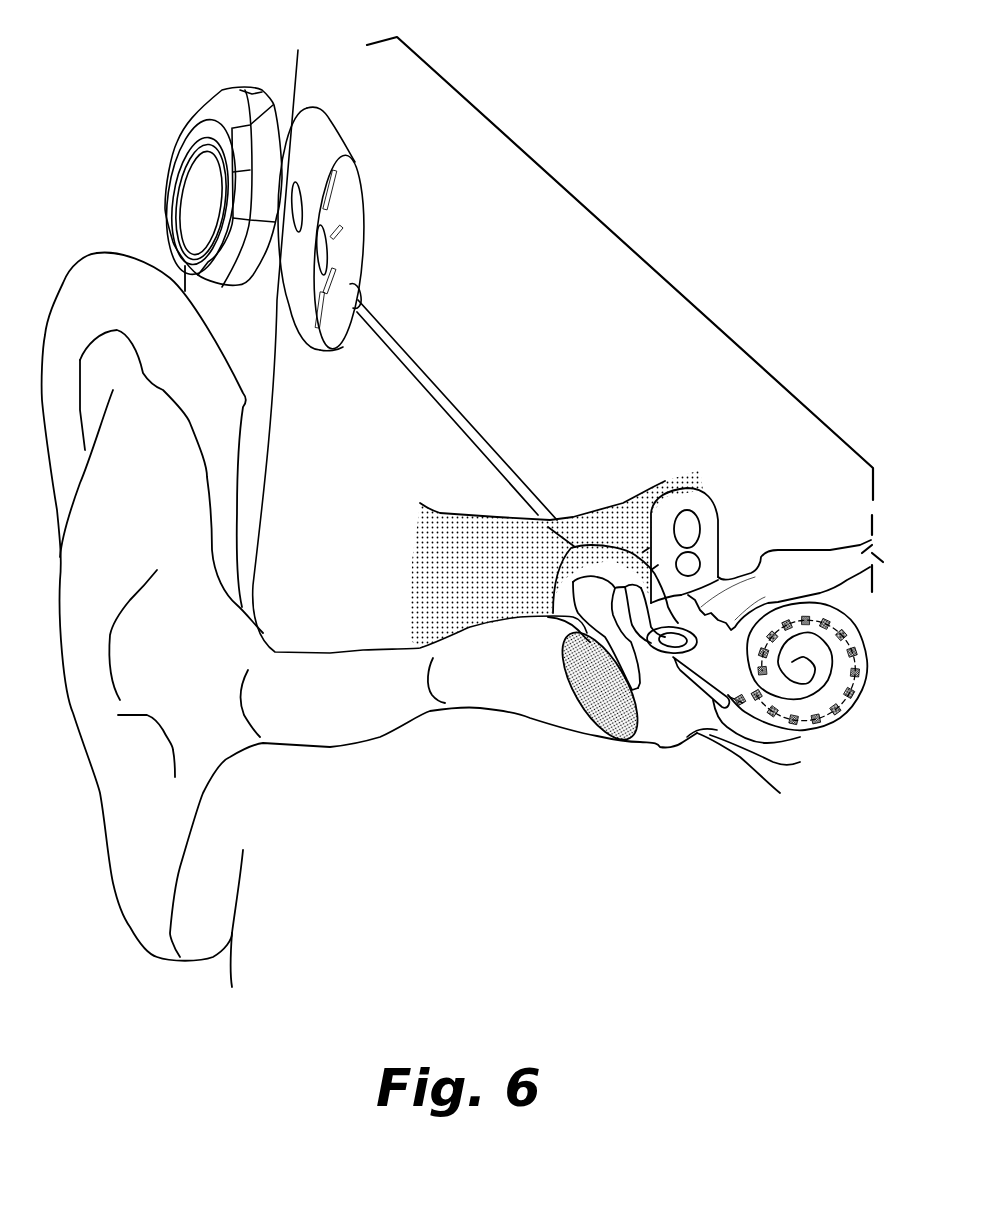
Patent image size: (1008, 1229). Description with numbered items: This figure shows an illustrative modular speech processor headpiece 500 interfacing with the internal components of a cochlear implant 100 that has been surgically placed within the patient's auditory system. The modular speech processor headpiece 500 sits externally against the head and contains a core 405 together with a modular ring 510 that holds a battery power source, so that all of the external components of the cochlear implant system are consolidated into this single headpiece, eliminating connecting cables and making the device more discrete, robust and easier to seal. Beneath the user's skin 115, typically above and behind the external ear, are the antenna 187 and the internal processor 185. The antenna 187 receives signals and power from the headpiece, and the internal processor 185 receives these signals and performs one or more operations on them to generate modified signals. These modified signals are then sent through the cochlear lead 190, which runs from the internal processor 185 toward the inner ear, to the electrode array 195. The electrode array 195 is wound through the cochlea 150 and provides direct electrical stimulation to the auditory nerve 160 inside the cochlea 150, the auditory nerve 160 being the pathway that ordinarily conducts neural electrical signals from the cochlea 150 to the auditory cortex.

The modular speech processor headpiece 500 is at (123, 108).
The modular ring 510 is at (220, 103).
The core 405 is at (180, 205).
The skin of recipient 115 is at (297, 62).
The antenna 187 is at (307, 125).
The internal processor 185 is at (337, 183).
The cochlear lead 190 is at (462, 410).
The cochlear implant 100 is at (601, 216).
The auditory nerve 160 is at (798, 550).
The cochlea 150 is at (850, 712).
The electrode array 195 is at (784, 723).